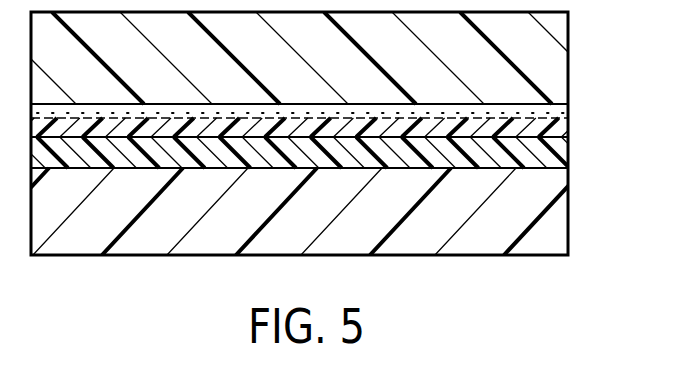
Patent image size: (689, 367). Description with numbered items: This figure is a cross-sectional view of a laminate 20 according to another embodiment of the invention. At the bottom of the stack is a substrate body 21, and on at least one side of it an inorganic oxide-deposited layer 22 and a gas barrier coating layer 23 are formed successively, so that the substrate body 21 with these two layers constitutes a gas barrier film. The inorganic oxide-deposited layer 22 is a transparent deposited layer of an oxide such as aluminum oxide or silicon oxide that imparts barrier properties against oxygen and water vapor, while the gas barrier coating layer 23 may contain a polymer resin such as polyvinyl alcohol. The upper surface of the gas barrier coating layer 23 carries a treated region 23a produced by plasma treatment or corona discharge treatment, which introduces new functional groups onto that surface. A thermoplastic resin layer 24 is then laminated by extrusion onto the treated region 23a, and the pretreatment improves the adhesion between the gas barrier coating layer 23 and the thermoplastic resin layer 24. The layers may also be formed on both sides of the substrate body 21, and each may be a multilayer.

The laminate 20 is at (633, 38).
The substrate body 21 is at (557, 208).
The inorganic oxide-deposited layer 22 is at (562, 155).
The gas barrier coating layer 23 is at (558, 127).
The treated region 23a is at (568, 108).
The thermoplastic resin layer 24 is at (553, 62).